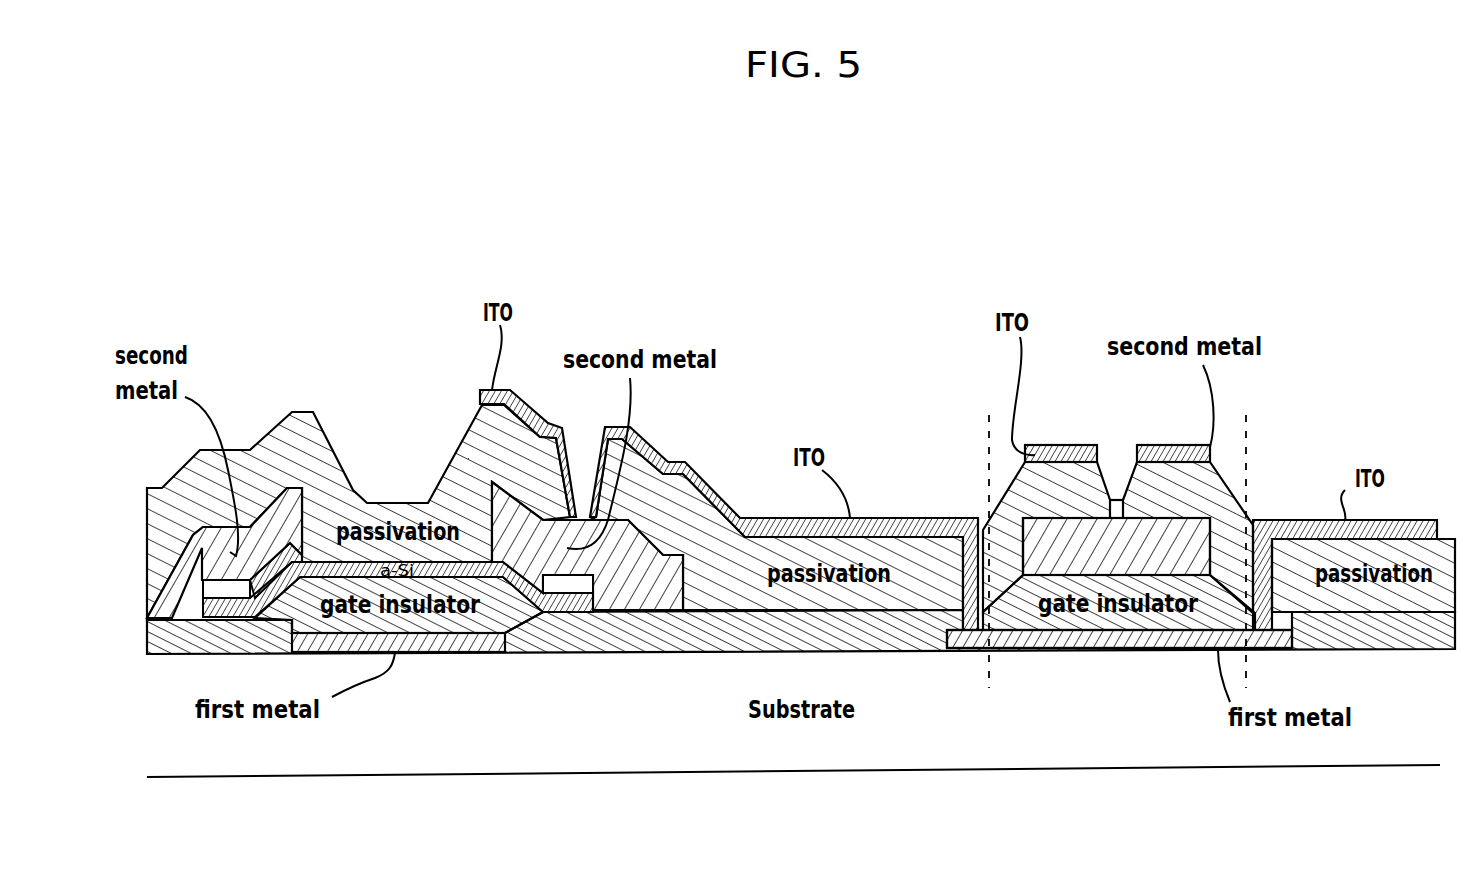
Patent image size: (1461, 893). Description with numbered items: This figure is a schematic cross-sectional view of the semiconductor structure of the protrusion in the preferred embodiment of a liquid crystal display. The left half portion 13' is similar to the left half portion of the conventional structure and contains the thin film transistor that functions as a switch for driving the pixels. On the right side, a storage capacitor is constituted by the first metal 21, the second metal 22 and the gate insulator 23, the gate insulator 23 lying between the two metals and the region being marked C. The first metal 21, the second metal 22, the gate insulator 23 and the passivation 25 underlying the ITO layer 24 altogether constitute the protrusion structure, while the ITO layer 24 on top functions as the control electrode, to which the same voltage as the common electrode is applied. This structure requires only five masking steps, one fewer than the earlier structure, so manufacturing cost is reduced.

The left half portion 13' is at (415, 474).
The first metal 21 is at (1190, 650).
The second metal 22 is at (1158, 532).
The gate insulator 23 is at (1035, 650).
The ITO layer 24 is at (1038, 443).
The passivation 25 is at (1015, 492).
The storage capacitor C is at (1170, 443).